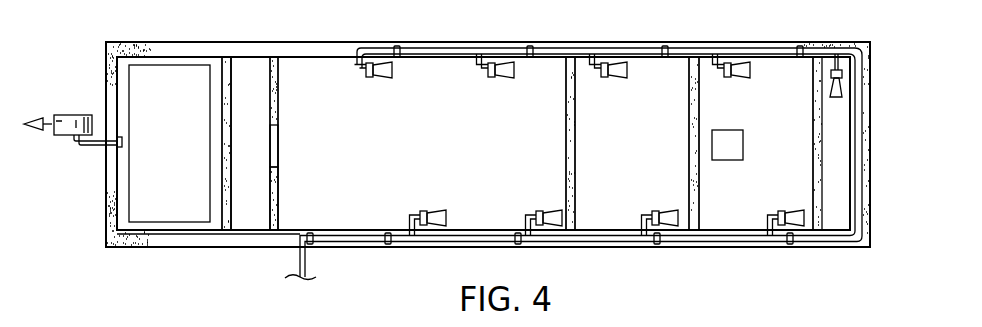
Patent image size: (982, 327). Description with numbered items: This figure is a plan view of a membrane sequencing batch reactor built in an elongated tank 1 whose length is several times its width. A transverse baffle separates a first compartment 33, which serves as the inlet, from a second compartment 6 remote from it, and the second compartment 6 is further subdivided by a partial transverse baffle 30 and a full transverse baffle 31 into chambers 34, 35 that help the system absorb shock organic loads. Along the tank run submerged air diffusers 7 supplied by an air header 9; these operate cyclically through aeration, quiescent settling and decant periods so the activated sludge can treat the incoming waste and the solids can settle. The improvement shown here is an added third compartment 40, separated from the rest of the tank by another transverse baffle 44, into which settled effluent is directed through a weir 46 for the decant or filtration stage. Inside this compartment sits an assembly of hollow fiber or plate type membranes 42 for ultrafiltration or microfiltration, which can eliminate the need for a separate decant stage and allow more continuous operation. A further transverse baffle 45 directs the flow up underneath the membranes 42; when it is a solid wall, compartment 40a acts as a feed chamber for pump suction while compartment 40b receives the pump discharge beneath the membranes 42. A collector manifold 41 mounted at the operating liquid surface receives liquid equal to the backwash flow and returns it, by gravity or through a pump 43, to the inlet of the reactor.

The tank 1 is at (138, 20).
The second compartment 6 is at (446, 133).
The submerged air diffusers 7 is at (383, 78).
The air header 9 is at (430, 243).
The partial transverse baffle 30 is at (697, 204).
The full transverse baffle 31 is at (577, 112).
The first compartment 33 is at (838, 217).
The chamber 34 is at (795, 137).
The chamber 35 is at (653, 172).
The third compartment 40 is at (254, 106).
The feed chamber compartment 40a is at (243, 220).
The pump discharge compartment 40b is at (150, 226).
The collector manifold 41 is at (98, 146).
The membranes 42 is at (182, 131).
The pump 43 is at (67, 113).
The transverse baffle 44 is at (276, 196).
The transverse baffle 45 is at (233, 80).
The weir 46 is at (278, 146).